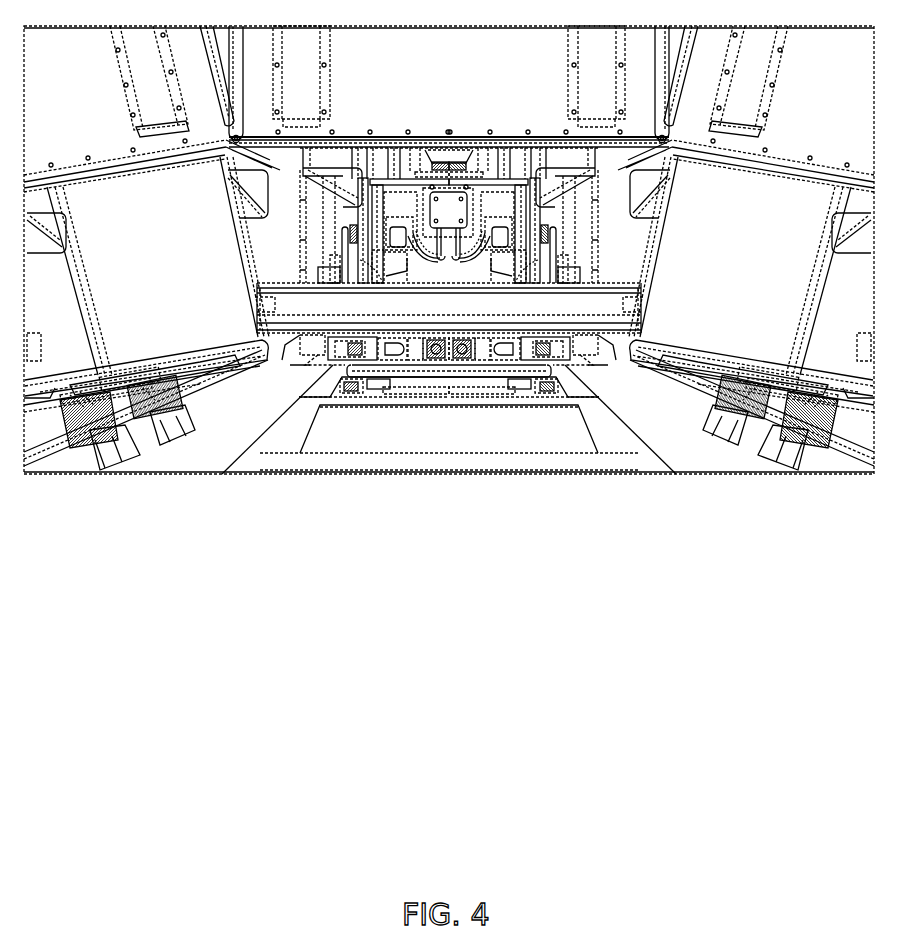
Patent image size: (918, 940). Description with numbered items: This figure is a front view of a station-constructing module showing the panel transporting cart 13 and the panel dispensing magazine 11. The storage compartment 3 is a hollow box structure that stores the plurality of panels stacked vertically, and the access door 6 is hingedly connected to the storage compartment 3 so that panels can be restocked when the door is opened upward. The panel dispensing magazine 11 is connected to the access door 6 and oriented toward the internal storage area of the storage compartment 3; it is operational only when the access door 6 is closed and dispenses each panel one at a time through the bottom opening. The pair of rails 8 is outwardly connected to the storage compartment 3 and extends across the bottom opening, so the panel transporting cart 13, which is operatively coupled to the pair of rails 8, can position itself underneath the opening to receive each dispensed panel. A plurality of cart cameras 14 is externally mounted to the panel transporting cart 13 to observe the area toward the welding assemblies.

The storage compartment 3 is at (437, 30).
The access door 6 is at (325, 225).
The pair of rails 8 is at (311, 412).
The panel dispensing magazine 11 is at (452, 208).
The panel transporting cart 13 is at (598, 275).
The cart cameras 14 is at (425, 336).